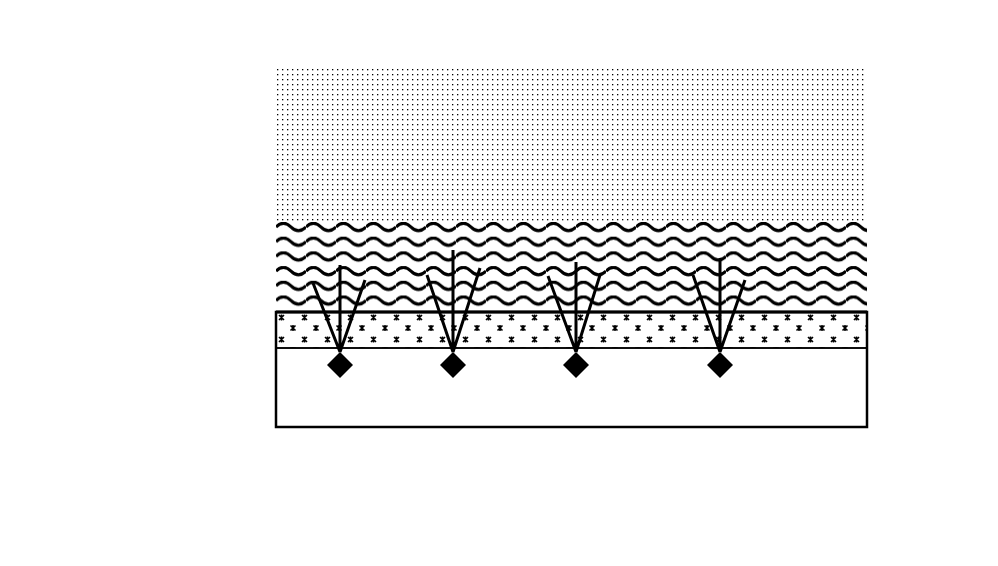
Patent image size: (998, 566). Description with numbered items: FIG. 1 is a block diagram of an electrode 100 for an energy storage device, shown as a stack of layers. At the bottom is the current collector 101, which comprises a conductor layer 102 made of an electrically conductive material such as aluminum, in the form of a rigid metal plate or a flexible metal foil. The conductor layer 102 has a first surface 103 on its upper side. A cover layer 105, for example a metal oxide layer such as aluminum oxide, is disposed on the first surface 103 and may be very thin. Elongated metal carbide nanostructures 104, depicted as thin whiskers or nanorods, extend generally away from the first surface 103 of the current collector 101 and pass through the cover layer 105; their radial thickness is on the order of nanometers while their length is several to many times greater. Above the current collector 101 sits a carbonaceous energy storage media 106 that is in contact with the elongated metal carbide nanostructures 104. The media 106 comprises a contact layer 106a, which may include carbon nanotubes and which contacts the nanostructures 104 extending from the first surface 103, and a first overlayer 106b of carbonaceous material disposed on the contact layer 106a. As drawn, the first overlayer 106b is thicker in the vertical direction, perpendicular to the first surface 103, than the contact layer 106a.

The electrode 100 is at (183, 56).
The current collector 101 is at (235, 375).
The conductor layer 102 is at (832, 402).
The first surface 103 is at (850, 344).
The elongated metal carbide nanostructures 104 is at (752, 296).
The cover layer 105 is at (846, 305).
The carbonaceous energy storage media 106 is at (68, 71).
The contact layer 106a is at (235, 273).
The first overlayer 106b is at (250, 195).